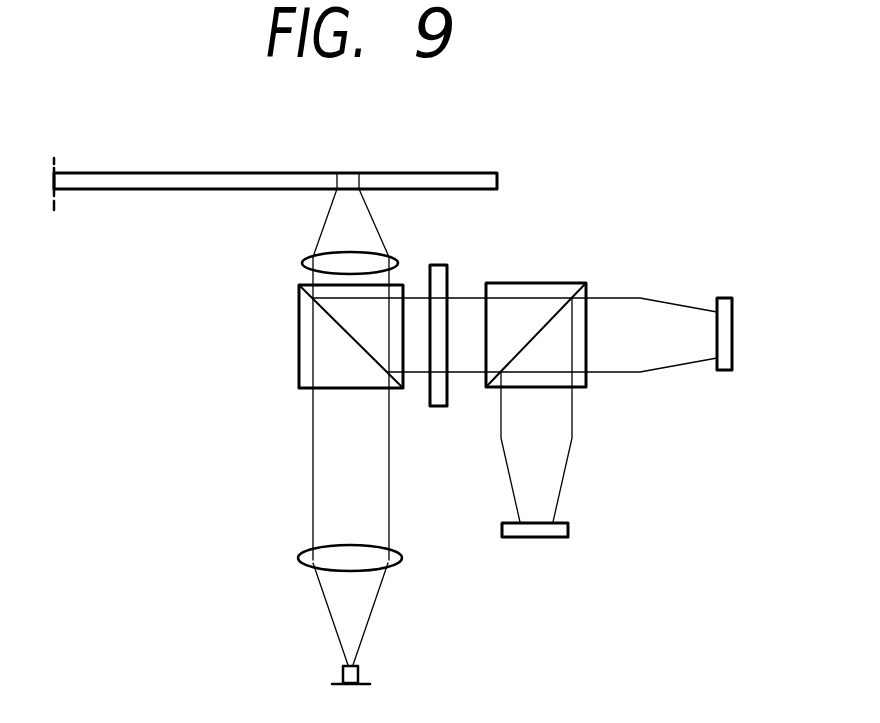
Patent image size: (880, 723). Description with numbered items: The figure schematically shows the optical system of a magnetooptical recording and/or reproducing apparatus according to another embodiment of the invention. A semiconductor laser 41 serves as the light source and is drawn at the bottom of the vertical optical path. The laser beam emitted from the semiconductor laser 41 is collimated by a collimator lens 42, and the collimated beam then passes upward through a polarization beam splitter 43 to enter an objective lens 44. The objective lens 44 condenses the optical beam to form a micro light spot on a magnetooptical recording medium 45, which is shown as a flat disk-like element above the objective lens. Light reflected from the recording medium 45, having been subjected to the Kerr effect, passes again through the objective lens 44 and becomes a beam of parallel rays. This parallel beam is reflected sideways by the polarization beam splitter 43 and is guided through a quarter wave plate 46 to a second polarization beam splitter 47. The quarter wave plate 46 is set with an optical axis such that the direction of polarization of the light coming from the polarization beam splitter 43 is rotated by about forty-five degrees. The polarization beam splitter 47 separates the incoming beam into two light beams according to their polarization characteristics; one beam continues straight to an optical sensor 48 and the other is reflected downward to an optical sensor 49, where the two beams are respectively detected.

The semiconductor laser 41 is at (360, 673).
The collimator lens 42 is at (307, 560).
The polarization beam splitter 43 is at (298, 357).
The objective lens 44 is at (393, 258).
The magnetooptical recording medium 45 is at (452, 172).
The quarter wave plate 46 is at (437, 407).
The polarization beam splitter 47 is at (543, 283).
The optical sensor 48 is at (723, 297).
The optical sensor 49 is at (570, 532).